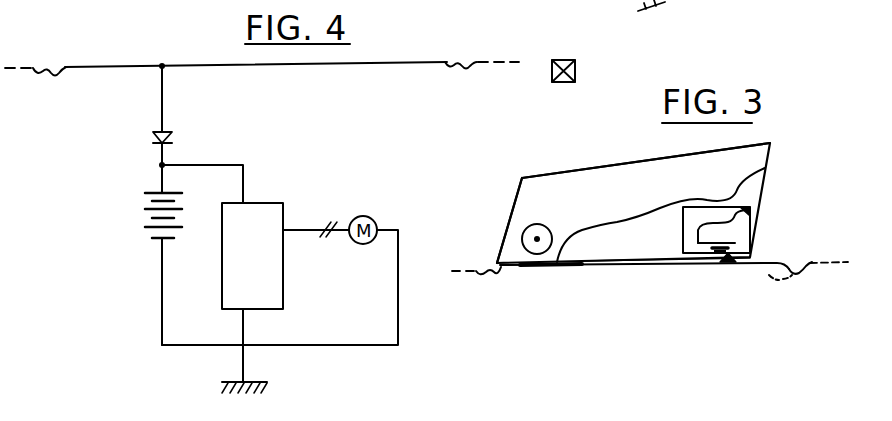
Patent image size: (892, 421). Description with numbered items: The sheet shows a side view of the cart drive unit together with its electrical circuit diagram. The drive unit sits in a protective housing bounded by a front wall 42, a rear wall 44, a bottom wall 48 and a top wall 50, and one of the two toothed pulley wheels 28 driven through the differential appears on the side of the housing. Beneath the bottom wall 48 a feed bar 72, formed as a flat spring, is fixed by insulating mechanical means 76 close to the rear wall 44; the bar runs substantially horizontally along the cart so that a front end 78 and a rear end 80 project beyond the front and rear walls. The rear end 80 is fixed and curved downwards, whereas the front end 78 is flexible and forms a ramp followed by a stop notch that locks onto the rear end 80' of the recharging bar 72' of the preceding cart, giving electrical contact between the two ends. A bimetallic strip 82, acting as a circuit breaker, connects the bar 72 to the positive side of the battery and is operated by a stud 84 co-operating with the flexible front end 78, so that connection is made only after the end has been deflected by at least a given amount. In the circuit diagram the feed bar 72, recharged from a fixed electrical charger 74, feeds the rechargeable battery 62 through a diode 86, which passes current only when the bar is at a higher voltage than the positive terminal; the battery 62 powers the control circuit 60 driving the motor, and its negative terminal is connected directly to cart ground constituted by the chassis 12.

In FIG. 4, the chassis 12 is at (258, 380).
In FIG. 3, the toothed pulley wheel 28 is at (537, 239).
In FIG. 3, the front wall 42 is at (771, 149).
In FIG. 3, the rear wall 44 is at (512, 203).
In FIG. 3, the bottom wall 48 is at (618, 261).
In FIG. 3, the top wall 50 is at (603, 165).
In FIG. 4, the control circuit 60 is at (258, 265).
In FIG. 4, the rechargeable battery 62 is at (143, 218).
In FIG. 4, the feed bar 72 is at (262, 81).
In FIG. 3, the feed bar 72 is at (620, 293).
In FIG. 3, the recharging bar of the preceding cart 72' is at (829, 293).
In FIG. 4, the fixed electrical charger 74 is at (558, 60).
In FIG. 3, the insulating mechanical means 76 is at (573, 268).
In FIG. 4, the front end 78 is at (466, 62).
In FIG. 3, the front end 78 is at (779, 253).
In FIG. 4, the rear end 80 is at (54, 90).
In FIG. 3, the rear end 80 is at (494, 295).
In FIG. 3, the rear end of the preceding cart's recharging bar 80' is at (776, 297).
In FIG. 3, the bimetallic strip 82 is at (727, 248).
In FIG. 3, the stud 84 is at (728, 262).
In FIG. 4, the diode 86 is at (172, 142).